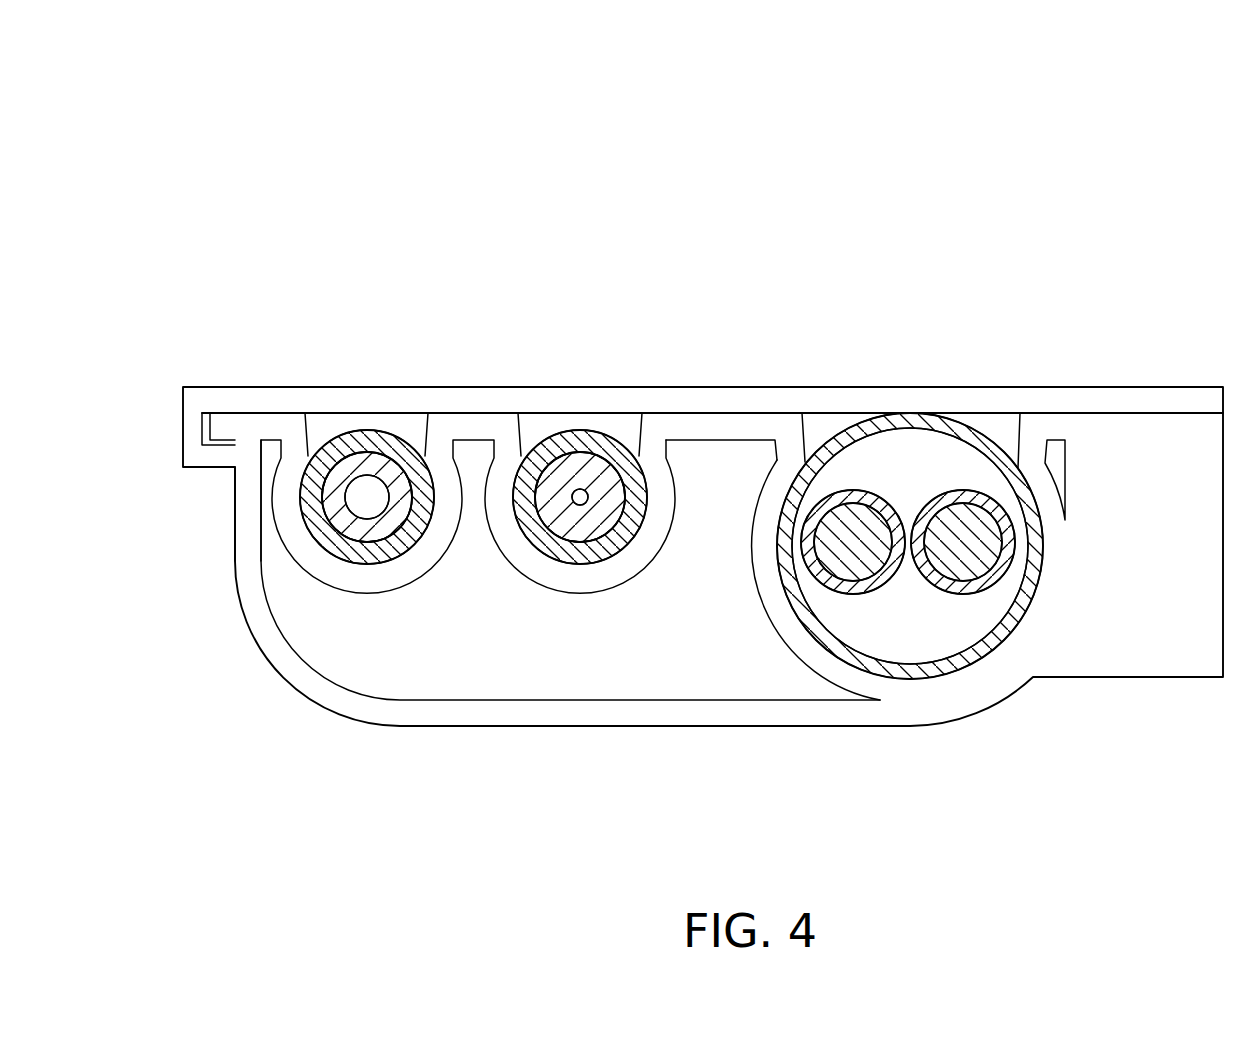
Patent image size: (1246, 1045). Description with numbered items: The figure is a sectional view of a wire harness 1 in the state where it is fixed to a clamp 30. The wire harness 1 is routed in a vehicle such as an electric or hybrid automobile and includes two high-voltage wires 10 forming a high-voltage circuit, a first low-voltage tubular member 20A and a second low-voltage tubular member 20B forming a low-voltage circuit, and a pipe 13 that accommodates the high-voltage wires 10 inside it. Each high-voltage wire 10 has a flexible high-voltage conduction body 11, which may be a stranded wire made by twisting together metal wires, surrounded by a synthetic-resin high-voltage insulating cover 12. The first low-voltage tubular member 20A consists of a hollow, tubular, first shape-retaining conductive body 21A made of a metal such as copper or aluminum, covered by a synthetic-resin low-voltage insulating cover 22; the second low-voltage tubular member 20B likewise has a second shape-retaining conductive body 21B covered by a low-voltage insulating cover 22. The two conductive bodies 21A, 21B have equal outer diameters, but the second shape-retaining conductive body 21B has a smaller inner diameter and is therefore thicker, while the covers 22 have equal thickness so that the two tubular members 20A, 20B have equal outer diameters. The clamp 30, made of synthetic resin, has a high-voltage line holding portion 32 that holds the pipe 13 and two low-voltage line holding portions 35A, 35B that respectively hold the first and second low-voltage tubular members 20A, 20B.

The wire harness 1 is at (950, 112).
The clamp 30 is at (1081, 360).
The low-voltage line holding portion 35A is at (312, 558).
The low-voltage line holding portion 35B is at (638, 558).
The high-voltage line holding portion 32 is at (778, 610).
The first low-voltage tubular member 20A is at (428, 773).
The second low-voltage tubular member 20B is at (640, 788).
The first shape-retaining conductive body 21A is at (358, 528).
The second shape-retaining conductive body 21B is at (565, 532).
The low-voltage insulating cover 22 is at (388, 552).
The high-voltage wire 10 is at (912, 777).
The high-voltage conduction body 11 is at (857, 553).
The high-voltage insulating cover 12 is at (878, 588).
The pipe 13 is at (1038, 562).